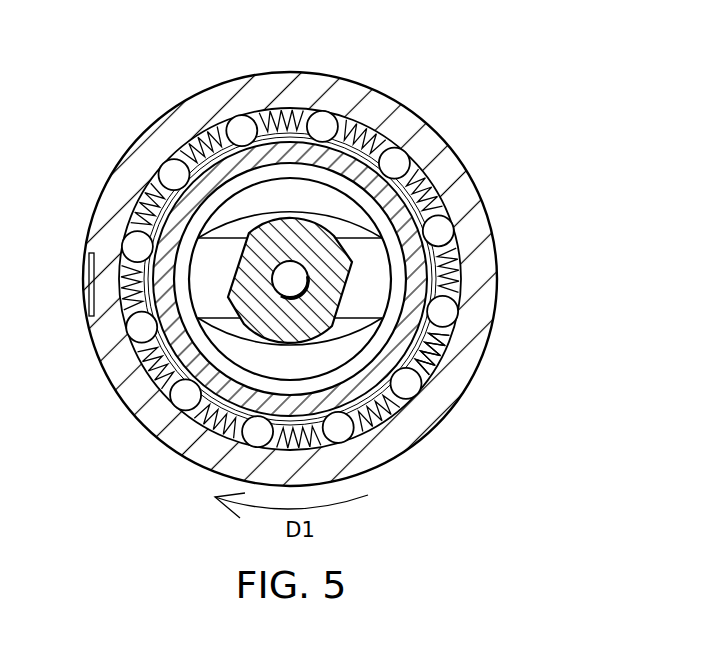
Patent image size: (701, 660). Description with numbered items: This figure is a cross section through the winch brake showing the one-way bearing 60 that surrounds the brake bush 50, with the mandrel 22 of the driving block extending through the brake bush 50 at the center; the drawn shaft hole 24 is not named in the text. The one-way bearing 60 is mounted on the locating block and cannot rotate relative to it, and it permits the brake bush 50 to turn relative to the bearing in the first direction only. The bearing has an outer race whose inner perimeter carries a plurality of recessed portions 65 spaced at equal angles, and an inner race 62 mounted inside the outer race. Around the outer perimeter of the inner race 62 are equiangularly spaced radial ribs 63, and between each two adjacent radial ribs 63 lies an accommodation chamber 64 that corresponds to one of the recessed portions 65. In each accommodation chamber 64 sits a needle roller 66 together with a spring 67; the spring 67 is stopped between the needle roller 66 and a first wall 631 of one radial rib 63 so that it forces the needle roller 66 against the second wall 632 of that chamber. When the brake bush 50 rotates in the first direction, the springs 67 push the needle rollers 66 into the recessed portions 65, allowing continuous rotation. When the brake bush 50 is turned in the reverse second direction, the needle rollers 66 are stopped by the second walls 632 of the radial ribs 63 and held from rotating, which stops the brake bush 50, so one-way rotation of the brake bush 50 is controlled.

The one-way bearing 60 is at (138, 126).
The inner race 62 is at (403, 122).
The radial rib 63 is at (452, 305).
The first wall 631 is at (455, 287).
The second wall 632 is at (457, 317).
The accommodation chamber 64 is at (457, 240).
The recessed portion 65 is at (462, 260).
The needle roller 66 is at (440, 315).
The spring 67 is at (435, 365).
The mandrel 22 is at (318, 237).
The axle hole 24 is at (287, 277).
The brake bush 50 is at (291, 140).